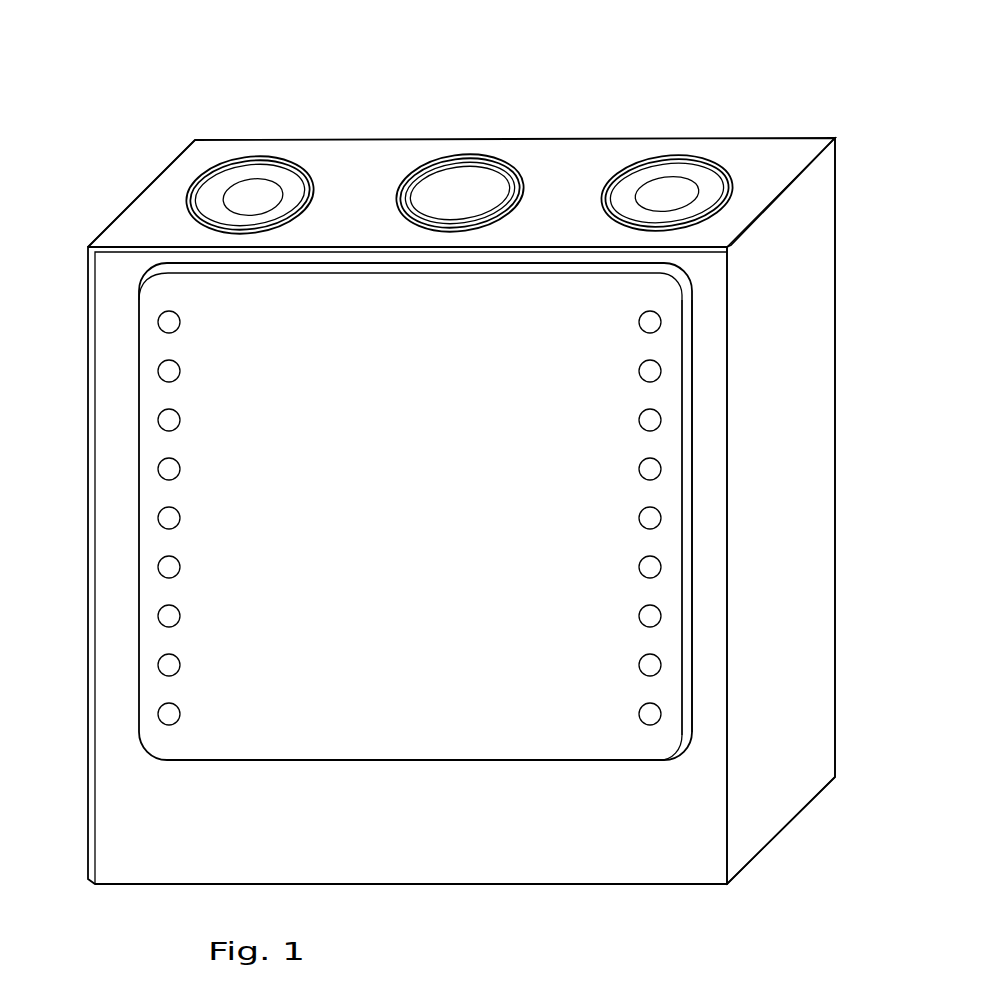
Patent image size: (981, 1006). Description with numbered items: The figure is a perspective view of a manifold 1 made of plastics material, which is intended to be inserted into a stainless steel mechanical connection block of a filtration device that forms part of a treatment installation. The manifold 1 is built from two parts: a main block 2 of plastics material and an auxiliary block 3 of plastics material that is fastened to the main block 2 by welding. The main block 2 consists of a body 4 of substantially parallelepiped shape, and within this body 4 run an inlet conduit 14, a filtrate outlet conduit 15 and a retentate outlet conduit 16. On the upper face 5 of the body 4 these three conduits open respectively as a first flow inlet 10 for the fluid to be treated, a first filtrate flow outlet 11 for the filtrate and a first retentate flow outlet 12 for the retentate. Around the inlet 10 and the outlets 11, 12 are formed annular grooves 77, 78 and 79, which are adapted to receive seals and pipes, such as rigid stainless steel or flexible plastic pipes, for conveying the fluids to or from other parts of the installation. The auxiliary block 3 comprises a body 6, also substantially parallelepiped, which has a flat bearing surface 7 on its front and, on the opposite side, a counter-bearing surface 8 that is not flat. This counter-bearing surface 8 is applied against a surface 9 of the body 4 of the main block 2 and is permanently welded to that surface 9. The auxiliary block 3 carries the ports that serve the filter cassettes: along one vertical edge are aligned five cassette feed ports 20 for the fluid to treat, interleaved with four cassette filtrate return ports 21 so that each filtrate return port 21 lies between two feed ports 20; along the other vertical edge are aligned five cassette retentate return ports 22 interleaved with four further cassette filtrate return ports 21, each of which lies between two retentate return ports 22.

The manifold 1 is at (137, 87).
The main block 2 is at (807, 142).
The auxiliary block 3 is at (418, 547).
The body 4 is at (803, 298).
The upper face 5 is at (117, 227).
The body 6 is at (687, 482).
The flat bearing surface 7 is at (285, 740).
The counter-bearing surface 8 is at (693, 376).
The surface 9 is at (688, 842).
The first flow inlet 10 is at (259, 182).
The first filtrate flow outlet 11 is at (474, 182).
The first retentate flow outlet 12 is at (670, 182).
The inlet conduit 14 is at (246, 186).
The filtrate outlet conduit 15 is at (457, 186).
The retentate outlet conduit 16 is at (655, 186).
The cassette feed port 20 is at (180, 322).
The cassette filtrate return port 21 is at (180, 371).
The cassette retentate return port 22 is at (639, 320).
The annular groove 77 is at (309, 168).
The annular groove 78 is at (517, 168).
The annular groove 79 is at (722, 168).